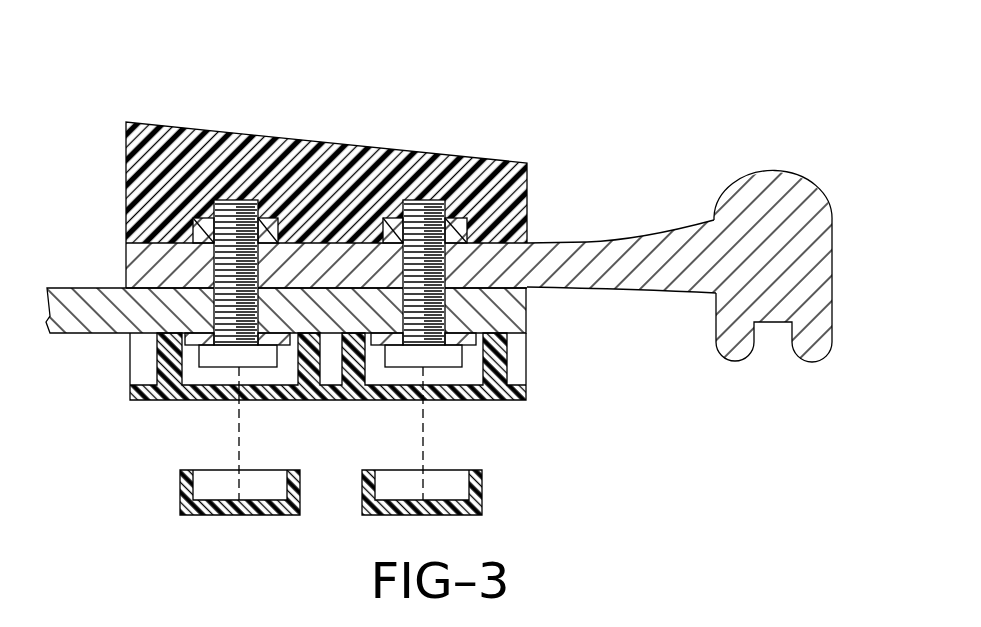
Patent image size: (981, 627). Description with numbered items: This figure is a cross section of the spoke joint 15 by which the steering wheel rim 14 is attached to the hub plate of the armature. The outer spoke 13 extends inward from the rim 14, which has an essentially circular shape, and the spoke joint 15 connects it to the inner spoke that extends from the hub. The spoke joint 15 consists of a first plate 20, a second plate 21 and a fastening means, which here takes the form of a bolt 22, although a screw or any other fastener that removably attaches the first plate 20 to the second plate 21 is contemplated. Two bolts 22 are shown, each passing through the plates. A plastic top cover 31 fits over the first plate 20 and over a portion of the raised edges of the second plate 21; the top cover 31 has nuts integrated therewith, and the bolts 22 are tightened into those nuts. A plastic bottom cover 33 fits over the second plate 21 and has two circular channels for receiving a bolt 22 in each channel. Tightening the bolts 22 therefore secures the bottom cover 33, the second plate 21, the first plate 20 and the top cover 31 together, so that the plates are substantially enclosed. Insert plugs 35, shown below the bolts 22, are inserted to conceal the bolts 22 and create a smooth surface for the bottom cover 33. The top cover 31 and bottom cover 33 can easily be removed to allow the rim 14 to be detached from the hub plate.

The outer spoke 13 is at (687, 272).
The rim 14 is at (772, 170).
The spoke joint 15 is at (479, 242).
The first plate 20 is at (543, 265).
The second plate 21 is at (110, 318).
The bolt 22 is at (428, 210).
The top cover 31 is at (335, 182).
The bottom cover 33 is at (497, 398).
The insert plug 35 is at (475, 498).